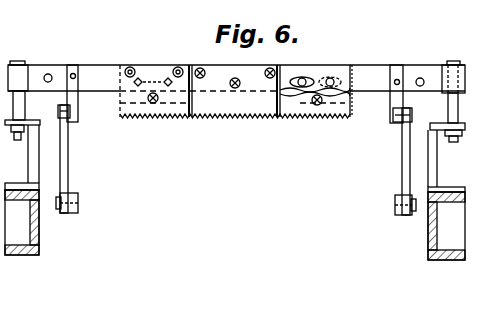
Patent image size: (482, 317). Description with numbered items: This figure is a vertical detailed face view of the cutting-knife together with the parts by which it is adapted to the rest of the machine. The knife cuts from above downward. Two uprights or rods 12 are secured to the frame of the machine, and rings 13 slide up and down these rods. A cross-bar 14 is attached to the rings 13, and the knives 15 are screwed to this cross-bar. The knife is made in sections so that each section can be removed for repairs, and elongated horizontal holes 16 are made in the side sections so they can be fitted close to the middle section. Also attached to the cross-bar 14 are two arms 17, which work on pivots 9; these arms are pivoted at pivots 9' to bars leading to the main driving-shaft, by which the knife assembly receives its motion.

The pivot 9 is at (235, 119).
The pivot 9' is at (236, 204).
The upright or rod 12 is at (25, 108).
The ring 13 is at (27, 64).
The cross-bar 14 is at (417, 70).
The knife 15 is at (236, 100).
The elongated horizontal hole 16 is at (150, 76).
The arm 17 is at (68, 149).